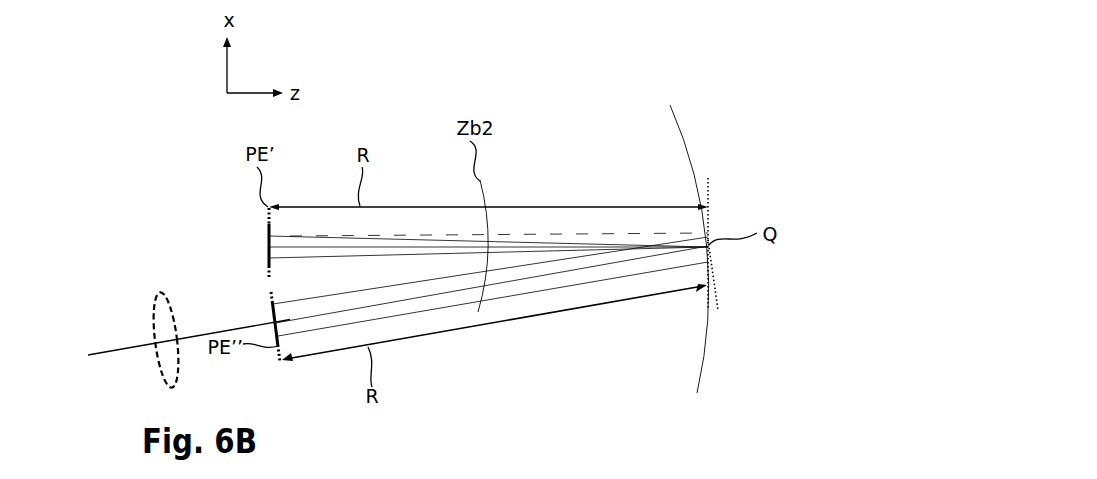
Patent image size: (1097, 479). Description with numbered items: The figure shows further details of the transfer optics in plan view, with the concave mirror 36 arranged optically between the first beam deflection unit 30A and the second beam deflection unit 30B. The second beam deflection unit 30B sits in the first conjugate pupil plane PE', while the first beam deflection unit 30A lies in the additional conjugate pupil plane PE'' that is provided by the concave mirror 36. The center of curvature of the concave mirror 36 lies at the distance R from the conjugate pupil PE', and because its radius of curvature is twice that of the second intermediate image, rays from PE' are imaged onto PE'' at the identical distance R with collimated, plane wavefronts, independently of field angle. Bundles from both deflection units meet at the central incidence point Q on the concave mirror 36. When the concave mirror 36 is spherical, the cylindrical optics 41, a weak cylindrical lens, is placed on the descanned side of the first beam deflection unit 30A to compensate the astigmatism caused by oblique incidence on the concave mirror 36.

The first beam deflection unit 30A is at (274, 318).
The second beam deflection unit 30B is at (268, 236).
The concave mirror 36 is at (670, 105).
The cylindrical optics 41 is at (157, 301).